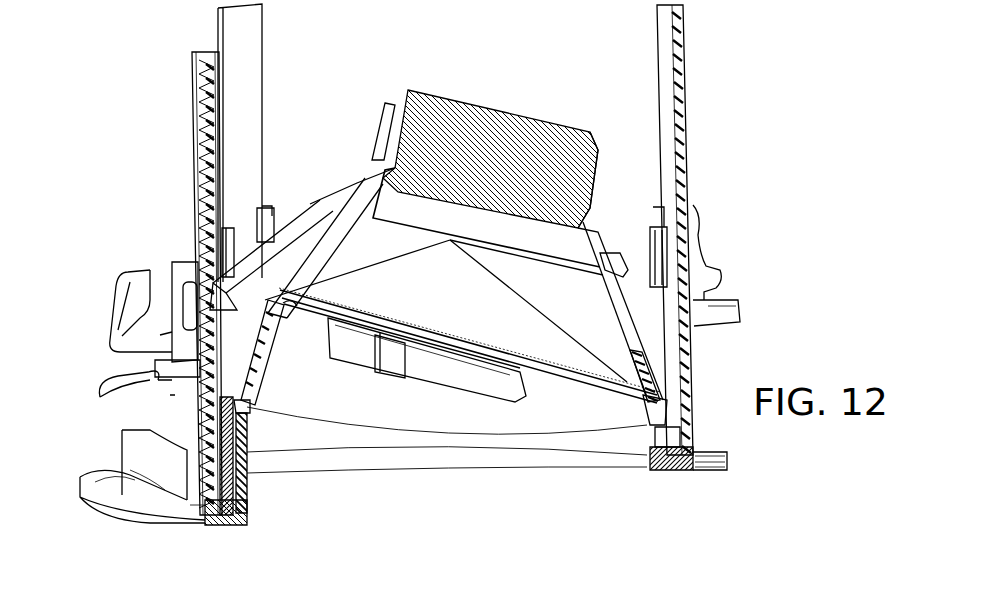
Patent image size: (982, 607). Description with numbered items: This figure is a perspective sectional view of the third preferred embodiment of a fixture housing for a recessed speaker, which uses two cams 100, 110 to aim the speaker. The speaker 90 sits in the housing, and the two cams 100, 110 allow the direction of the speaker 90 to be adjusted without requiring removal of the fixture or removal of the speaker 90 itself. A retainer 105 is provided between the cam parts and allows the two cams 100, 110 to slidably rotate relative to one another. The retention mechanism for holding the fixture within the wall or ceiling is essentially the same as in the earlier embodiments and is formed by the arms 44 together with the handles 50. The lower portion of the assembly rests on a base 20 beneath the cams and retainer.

The base 20 is at (207, 524).
The arm 44 is at (683, 128).
The handle 50 is at (717, 290).
The speaker 90 is at (408, 92).
The cam 100 is at (652, 460).
The retainer 105 is at (222, 430).
The cam 110 is at (647, 420).